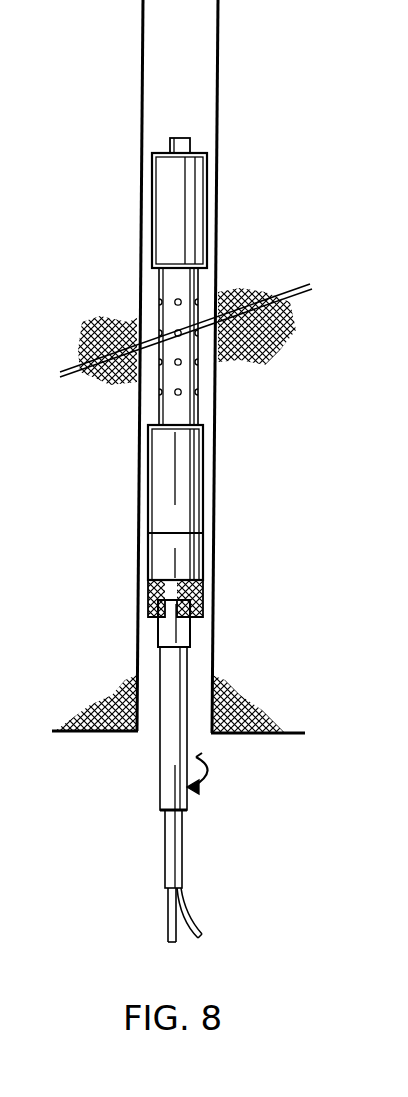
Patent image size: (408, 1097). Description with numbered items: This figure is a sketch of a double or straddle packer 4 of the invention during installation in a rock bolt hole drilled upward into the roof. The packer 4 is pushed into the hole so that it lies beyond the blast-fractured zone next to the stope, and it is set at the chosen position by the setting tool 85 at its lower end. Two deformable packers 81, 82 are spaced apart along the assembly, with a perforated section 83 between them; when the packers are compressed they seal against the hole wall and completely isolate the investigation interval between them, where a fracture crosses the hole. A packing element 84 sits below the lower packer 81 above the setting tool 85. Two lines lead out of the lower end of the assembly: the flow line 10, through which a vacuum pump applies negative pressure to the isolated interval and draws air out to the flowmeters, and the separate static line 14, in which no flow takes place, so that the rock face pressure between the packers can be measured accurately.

The straddle packer 4 is at (156, 290).
The flow line 10 is at (168, 920).
The static line 14 is at (190, 921).
The packer 81 is at (160, 487).
The packer 82 is at (170, 200).
The perforation section 83 is at (162, 403).
The packing 84 is at (150, 601).
The setting tool 85 is at (160, 638).